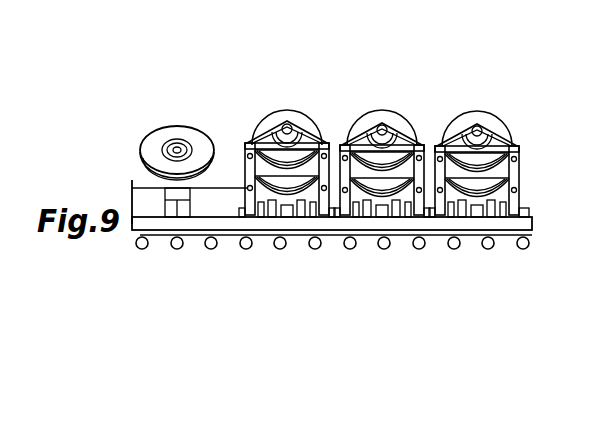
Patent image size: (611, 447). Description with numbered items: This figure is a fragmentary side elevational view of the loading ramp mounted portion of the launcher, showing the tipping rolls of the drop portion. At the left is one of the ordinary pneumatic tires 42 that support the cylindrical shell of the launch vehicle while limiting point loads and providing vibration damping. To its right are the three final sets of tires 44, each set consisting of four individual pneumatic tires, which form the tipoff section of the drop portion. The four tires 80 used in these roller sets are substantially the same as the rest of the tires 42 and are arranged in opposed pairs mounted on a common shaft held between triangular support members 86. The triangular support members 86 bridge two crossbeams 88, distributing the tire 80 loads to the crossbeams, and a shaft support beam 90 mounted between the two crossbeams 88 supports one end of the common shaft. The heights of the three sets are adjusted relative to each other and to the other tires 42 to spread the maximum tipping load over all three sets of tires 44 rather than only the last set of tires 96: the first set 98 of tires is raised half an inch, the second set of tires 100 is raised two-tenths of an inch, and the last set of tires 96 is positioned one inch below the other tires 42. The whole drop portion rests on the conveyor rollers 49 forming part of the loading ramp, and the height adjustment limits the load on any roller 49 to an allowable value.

The pneumatic tires 42 is at (173, 126).
The final sets of tires 44 is at (447, 75).
The conveyor rollers 49 is at (177, 249).
The tires 80 is at (520, 145).
The triangular support members 86 is at (256, 143).
The crossbeams 88 is at (521, 183).
The shaft support beam 90 is at (289, 205).
The last set of tires 96 is at (508, 120).
The first set of tires 98 is at (290, 123).
The second set of tires 100 is at (408, 113).